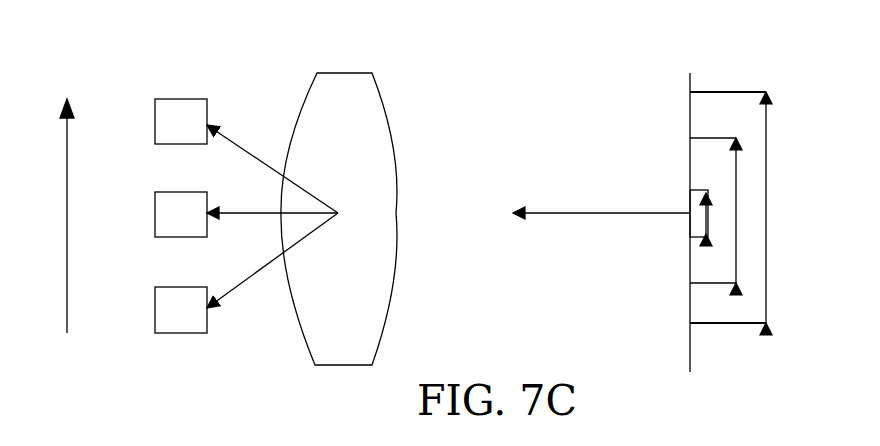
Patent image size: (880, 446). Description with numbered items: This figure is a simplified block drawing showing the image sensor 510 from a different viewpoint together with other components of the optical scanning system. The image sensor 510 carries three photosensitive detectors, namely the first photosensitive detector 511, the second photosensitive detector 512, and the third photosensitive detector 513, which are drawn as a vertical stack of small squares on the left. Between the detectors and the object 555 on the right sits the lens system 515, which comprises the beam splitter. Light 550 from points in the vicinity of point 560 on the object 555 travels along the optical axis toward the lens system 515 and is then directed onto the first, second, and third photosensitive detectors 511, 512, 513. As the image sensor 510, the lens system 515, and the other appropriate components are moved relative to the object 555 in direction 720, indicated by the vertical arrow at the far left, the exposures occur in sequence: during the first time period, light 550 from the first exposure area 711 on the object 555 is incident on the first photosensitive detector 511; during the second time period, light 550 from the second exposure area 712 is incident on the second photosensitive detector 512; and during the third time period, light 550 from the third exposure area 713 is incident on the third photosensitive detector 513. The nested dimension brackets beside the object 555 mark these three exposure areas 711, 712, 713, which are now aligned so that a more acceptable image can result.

The image sensor 510 is at (185, 80).
The first photosensitive detector 511 is at (182, 144).
The second photosensitive detector 512 is at (185, 237).
The third photosensitive detector 513 is at (187, 333).
The lens system 515 is at (386, 122).
The light 550 is at (539, 215).
The object 555 is at (690, 342).
The point 560 is at (690, 216).
The first exposure area 711 is at (708, 218).
The second exposure area 712 is at (736, 193).
The third exposure area 713 is at (766, 160).
The direction 720 is at (66, 233).